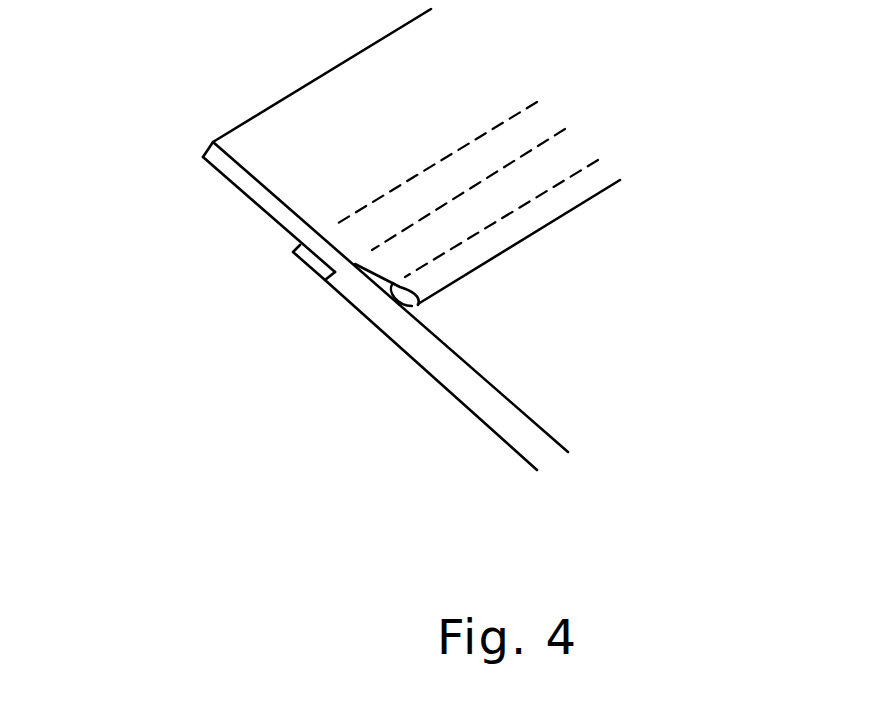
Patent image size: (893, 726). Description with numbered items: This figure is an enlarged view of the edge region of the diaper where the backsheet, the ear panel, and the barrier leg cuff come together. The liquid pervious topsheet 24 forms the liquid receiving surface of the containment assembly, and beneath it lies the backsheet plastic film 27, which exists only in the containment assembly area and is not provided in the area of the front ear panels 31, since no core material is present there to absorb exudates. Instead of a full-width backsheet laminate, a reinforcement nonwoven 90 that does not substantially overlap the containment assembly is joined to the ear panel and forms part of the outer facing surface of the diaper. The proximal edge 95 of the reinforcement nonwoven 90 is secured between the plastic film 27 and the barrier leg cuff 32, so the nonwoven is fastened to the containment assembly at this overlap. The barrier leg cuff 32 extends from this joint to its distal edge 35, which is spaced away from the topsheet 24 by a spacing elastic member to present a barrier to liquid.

The liquid pervious topsheet 24 is at (600, 356).
The plastic film 27 is at (455, 378).
The front ear panels 31 is at (384, 121).
The barrier leg cuffs 32 is at (553, 163).
The distal edge 35 is at (505, 253).
The reinforcement nonwoven 90 is at (244, 183).
The proximal edge 95 is at (357, 263).